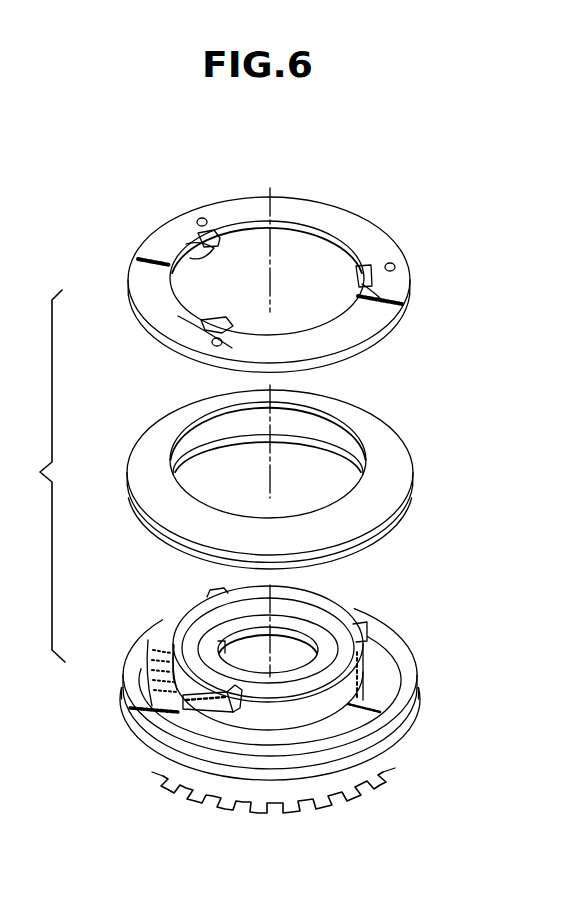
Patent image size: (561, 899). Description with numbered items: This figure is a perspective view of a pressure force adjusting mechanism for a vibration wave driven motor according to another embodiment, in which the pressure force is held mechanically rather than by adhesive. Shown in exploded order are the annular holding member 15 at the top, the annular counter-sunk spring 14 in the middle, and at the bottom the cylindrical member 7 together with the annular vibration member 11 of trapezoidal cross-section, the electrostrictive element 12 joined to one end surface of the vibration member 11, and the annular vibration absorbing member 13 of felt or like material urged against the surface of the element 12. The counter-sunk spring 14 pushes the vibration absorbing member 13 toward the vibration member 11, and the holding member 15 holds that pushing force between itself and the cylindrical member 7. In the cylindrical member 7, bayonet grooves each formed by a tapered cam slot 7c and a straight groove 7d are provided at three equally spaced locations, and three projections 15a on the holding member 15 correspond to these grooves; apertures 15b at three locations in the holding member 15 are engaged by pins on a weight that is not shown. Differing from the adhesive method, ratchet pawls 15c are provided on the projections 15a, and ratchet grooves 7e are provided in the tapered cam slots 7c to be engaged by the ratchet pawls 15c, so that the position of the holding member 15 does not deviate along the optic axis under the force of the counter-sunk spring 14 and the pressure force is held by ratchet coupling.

The annular holding member 15 is at (331, 212).
The projections 15a is at (155, 239).
The apertures 15b is at (196, 220).
The ratchet pawls 15c is at (218, 232).
The annular counter-sunk spring 14 is at (387, 457).
The cylindrical member 7 is at (128, 668).
The tapered cam slot 7c is at (196, 726).
The straight groove 7d is at (218, 595).
The ratchet grooves 7e is at (162, 720).
The annular vibration absorbing member 13 is at (380, 677).
The electrostrictive element 12 is at (410, 713).
The annular vibration member 11 is at (387, 770).